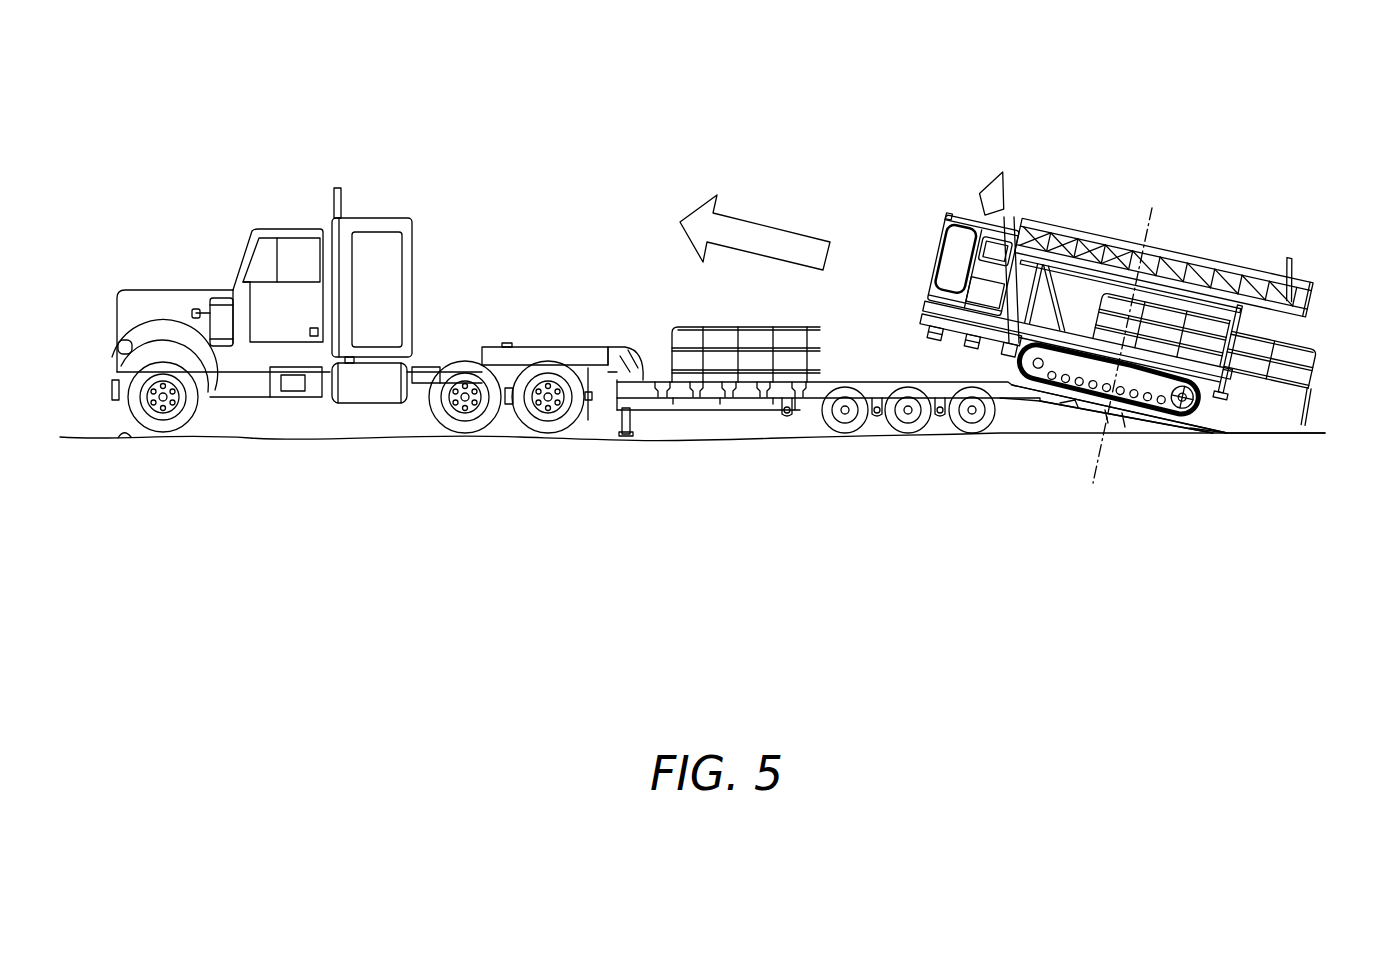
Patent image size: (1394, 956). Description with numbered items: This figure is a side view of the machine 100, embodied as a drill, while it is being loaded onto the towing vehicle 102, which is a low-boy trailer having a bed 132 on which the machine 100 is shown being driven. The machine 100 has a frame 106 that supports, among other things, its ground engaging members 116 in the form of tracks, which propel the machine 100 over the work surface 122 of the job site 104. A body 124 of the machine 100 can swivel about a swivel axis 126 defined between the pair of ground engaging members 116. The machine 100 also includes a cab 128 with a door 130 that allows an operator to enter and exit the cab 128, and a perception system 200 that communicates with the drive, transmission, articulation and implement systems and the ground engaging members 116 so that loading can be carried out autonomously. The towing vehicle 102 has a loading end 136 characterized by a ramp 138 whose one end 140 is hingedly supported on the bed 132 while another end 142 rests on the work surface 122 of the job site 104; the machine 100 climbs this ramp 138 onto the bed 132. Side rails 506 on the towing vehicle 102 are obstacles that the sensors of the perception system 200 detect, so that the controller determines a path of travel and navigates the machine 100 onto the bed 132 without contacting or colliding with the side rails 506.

The machine 100 is at (1283, 182).
The towing vehicle 102 is at (291, 158).
The job site 104 is at (92, 428).
The frame 106 is at (1025, 333).
The ground engaging members 116 is at (1207, 403).
The work surface 122 is at (118, 439).
The body 124 is at (1033, 208).
The swivel axis 126 is at (1152, 218).
The cab 128 is at (954, 213).
The door 130 is at (950, 258).
The bed 132 is at (665, 380).
The loading end 136 is at (1253, 424).
The ramp 138 is at (1151, 434).
The one end of the ramp 140 is at (1077, 408).
The another end of the ramp 142 is at (1220, 436).
The perception system 200 is at (965, 295).
The side rails 506 is at (750, 326).